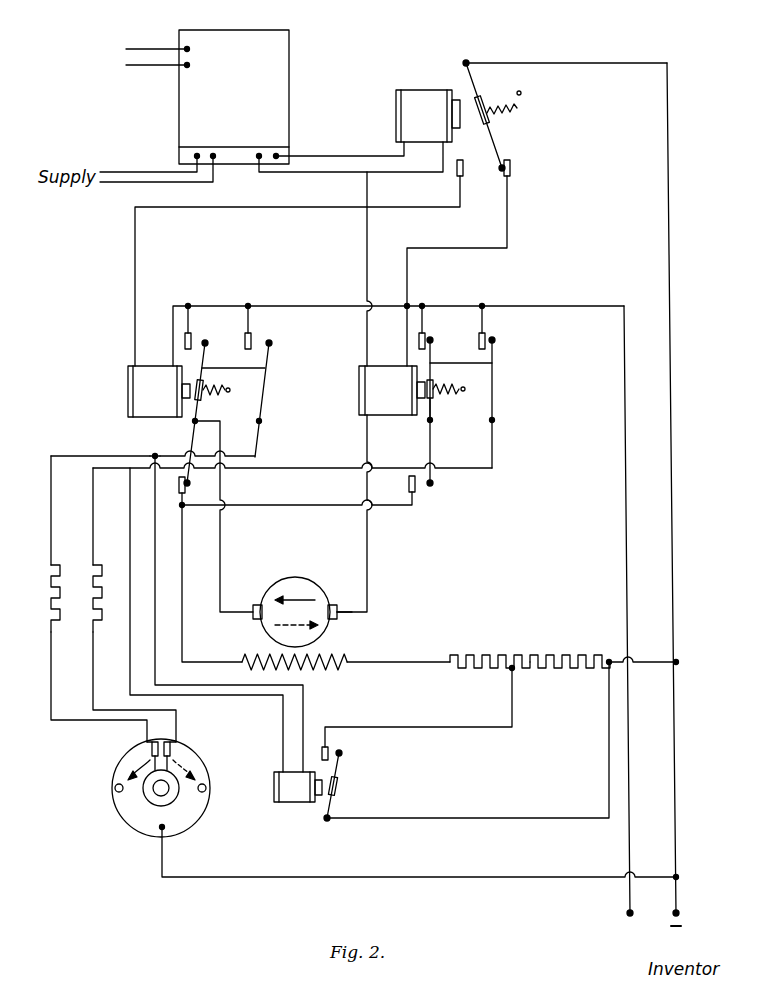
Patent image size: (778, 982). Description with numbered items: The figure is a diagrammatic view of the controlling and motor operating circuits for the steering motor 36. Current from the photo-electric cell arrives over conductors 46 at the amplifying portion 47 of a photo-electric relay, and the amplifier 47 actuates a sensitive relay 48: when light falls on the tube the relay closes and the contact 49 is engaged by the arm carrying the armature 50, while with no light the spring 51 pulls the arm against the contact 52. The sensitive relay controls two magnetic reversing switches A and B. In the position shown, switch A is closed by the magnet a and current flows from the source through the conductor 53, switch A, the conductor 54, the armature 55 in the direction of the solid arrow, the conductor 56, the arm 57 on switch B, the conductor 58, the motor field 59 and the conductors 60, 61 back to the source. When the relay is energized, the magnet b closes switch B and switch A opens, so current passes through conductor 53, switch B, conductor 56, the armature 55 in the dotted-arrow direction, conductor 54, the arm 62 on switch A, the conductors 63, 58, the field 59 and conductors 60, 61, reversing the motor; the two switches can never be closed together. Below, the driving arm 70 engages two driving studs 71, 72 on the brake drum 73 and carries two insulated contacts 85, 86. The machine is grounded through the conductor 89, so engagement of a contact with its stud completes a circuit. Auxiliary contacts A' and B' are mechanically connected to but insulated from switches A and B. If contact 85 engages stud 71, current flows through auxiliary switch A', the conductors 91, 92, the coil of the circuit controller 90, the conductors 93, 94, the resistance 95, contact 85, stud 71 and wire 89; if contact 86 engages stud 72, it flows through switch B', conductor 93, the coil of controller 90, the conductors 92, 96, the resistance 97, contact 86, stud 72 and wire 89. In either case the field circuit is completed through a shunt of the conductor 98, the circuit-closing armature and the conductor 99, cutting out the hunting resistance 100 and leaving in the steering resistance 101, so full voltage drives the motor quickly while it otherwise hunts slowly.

The conductors 46 is at (150, 64).
The amplifying portion 47 is at (271, 198).
The sensitive relay 48 is at (430, 86).
The contact 49 is at (463, 176).
The armature 50 is at (488, 117).
The spring 51 is at (504, 97).
The contact 52 is at (511, 170).
The conductor 53 is at (625, 527).
The conductor 54 is at (369, 444).
The armature 55 is at (314, 588).
The conductor 56 is at (221, 541).
The arm 57 is at (194, 441).
The conductor 58 is at (182, 595).
The motor field 59 is at (246, 662).
The conductor 60 is at (398, 651).
The conductor 61 is at (676, 772).
The arm 62 is at (432, 444).
The conductor 63 is at (312, 505).
The steering motor 36 is at (351, 628).
The arm 70 is at (150, 761).
The driving stud 71 is at (116, 793).
The driving stud 72 is at (205, 793).
The brake drum 73 is at (139, 825).
The contact 85 is at (150, 748).
The contact 86 is at (172, 752).
The conductor 89 is at (398, 877).
The circuit controller 90 is at (298, 799).
The conductor 91 is at (329, 468).
The conductor 92 is at (130, 551).
The conductor 93 is at (155, 578).
The conductor 94 is at (51, 518).
The resistance 95 is at (82, 653).
The conductor 96 is at (93, 532).
The resistance 97 is at (134, 653).
The conductor 98 is at (469, 727).
The conductor 99 is at (489, 818).
The hunting resistance 100 is at (604, 650).
The steering resistance 101 is at (490, 650).
The magnetic reversing switch A is at (455, 395).
The auxiliary contact A' is at (498, 386).
The magnetic reversing switch B is at (225, 394).
The auxiliary contact B' is at (268, 381).
The magnet a is at (392, 390).
The magnet b is at (159, 391).